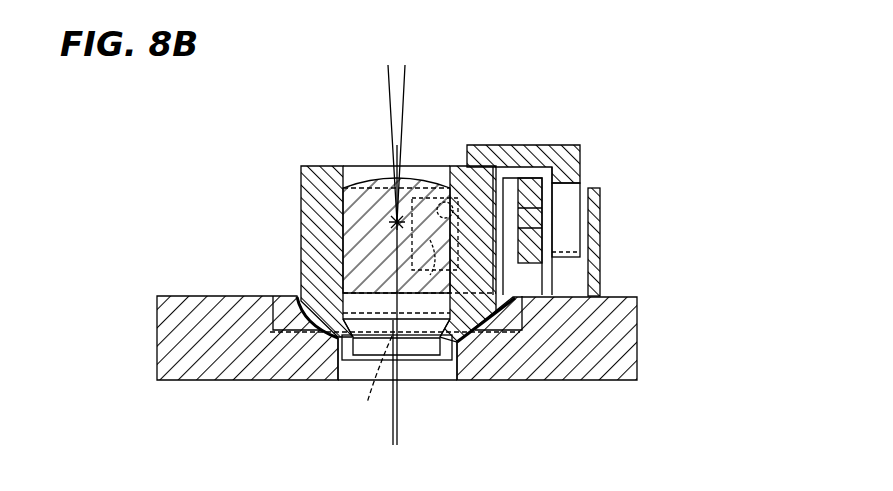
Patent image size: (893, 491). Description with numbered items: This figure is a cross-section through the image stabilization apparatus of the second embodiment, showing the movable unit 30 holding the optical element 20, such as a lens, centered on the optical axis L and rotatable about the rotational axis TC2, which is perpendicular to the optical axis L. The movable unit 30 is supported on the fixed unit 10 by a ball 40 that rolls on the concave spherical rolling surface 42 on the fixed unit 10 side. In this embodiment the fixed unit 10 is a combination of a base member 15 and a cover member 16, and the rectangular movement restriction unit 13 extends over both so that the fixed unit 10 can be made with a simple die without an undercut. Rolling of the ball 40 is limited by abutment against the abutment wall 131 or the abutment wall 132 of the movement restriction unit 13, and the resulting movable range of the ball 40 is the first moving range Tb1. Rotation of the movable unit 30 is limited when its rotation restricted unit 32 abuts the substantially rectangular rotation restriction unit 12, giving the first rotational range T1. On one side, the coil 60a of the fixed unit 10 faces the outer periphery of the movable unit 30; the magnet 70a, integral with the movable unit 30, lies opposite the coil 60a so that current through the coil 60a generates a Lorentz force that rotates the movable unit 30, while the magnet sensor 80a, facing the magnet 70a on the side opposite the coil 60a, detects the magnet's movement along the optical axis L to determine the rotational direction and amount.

The fixed unit 10 is at (445, 338).
The rotation restriction unit 12 is at (337, 369).
The movement restriction unit 13 is at (404, 336).
The base member 15 is at (627, 335).
The cover member 16 is at (518, 322).
The optical element 20 is at (368, 193).
The movable unit 30 is at (318, 178).
The rotation restricted unit 32 is at (335, 353).
The ball 40 is at (388, 345).
The rolling surface 42 is at (352, 355).
The coil 60a is at (573, 245).
The magnet 70a is at (598, 232).
The magnet sensor 80a is at (533, 248).
The abutment wall 131 is at (312, 290).
The abutment wall 132 is at (533, 291).
The optical axis L is at (400, 165).
The rotational axis TC2 is at (392, 226).
The first rotational range T1 is at (345, 65).
The first moving range Tb1 is at (401, 436).